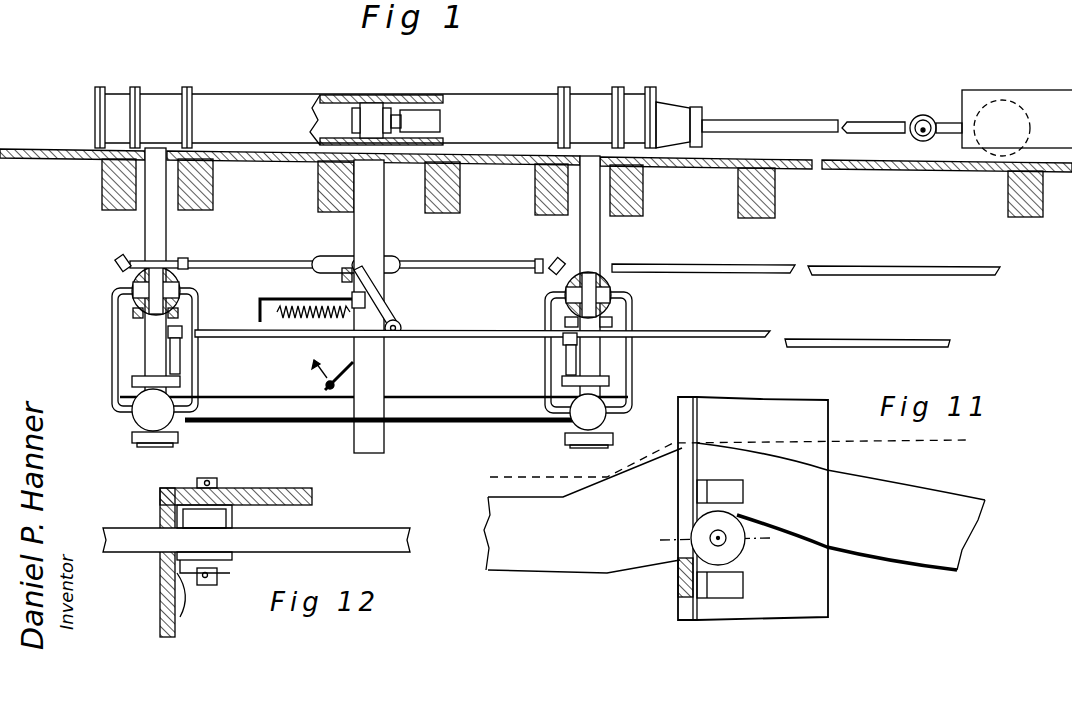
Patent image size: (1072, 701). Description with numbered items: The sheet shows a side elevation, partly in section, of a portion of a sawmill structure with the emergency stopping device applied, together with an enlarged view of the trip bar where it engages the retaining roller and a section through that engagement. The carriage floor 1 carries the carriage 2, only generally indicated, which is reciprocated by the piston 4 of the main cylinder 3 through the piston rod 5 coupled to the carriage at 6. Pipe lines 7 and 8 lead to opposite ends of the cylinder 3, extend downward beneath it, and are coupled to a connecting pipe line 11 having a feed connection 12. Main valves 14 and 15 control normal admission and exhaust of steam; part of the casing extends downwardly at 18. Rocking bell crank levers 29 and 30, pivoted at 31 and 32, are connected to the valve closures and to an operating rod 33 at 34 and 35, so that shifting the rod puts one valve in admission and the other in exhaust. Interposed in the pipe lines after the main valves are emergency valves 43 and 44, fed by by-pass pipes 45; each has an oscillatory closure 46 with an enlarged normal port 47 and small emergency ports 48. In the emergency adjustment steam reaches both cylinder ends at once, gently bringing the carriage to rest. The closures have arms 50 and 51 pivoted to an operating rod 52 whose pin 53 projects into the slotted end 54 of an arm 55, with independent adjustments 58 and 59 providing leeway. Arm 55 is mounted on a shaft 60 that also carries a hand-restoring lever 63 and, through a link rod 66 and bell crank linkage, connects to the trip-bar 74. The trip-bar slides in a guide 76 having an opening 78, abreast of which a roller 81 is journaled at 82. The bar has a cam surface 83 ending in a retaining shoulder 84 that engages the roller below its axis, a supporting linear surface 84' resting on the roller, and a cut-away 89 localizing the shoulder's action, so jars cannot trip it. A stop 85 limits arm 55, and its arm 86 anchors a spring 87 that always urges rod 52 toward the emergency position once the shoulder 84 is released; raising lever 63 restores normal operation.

In FIG. 1, the carriage floor 1 is at (880, 170).
In FIG. 1, the carriage 2 is at (998, 96).
In FIG. 1, the main cylinder 3 is at (480, 105).
In FIG. 1, the piston 4 is at (375, 110).
In FIG. 1, the piston rod 5 is at (415, 120).
In FIG. 1, the coupling 6 is at (923, 126).
In FIG. 1, the pipe line 7 is at (153, 243).
In FIG. 1, the pipe line 8 is at (600, 240).
In FIG. 1, the connecting pipe line 11 is at (470, 416).
In FIG. 11, the feed connection 12 is at (737, 460).
In FIG. 1, the main valve 14 is at (130, 434).
In FIG. 1, the main valve 15 is at (612, 440).
In FIG. 1, the casing extension 18 is at (600, 262).
In FIG. 1, the bell crank lever 29 is at (185, 352).
In FIG. 1, the bell crank lever 30 is at (562, 352).
In FIG. 1, the pivot 31 is at (185, 370).
In FIG. 1, the pivot 32 is at (565, 372).
In FIG. 1, the operating rod 33 is at (572, 330).
In FIG. 1, the connection 34 is at (193, 332).
In FIG. 1, the connection 35 is at (545, 334).
In FIG. 1, the emergency valve 43 is at (180, 283).
In FIG. 1, the emergency valve 44 is at (610, 287).
In FIG. 1, the by-pass pipe 45 is at (115, 376).
In FIG. 1, the oscillatory valve closure 46 is at (133, 306).
In FIG. 1, the normal port 47 is at (133, 284).
In FIG. 1, the emergency port 48 is at (170, 262).
In FIG. 1, the arm 50 is at (125, 255).
In FIG. 1, the arm 51 is at (559, 261).
In FIG. 1, the operating rod 52 is at (290, 262).
In FIG. 1, the pin 53 is at (367, 258).
In FIG. 1, the slotted end 54 is at (344, 276).
In FIG. 1, the arm 55 is at (380, 303).
In FIG. 1, the independent adjustment 58 is at (188, 262).
In FIG. 1, the independent adjustment 59 is at (536, 262).
In FIG. 1, the shaft 60 is at (400, 324).
In FIG. 1, the hand-restoring lever 63 is at (353, 373).
In FIG. 1, the link rod 66 is at (780, 265).
In FIG. 11, the trip-bar 74 is at (898, 487).
In FIG. 12, the trip-bar 74 is at (345, 536).
In FIG. 11, the guide 76 is at (790, 398).
In FIG. 12, the guide 76 is at (262, 490).
In FIG. 11, the opening 78 is at (677, 567).
In FIG. 12, the opening 78 is at (165, 560).
In FIG. 11, the roller 81 is at (732, 552).
In FIG. 12, the roller 81 is at (230, 522).
In FIG. 12, the journal 82 is at (197, 482).
In FIG. 11, the cam surface 83 is at (643, 571).
In FIG. 11, the retaining shoulder 84 is at (627, 510).
In FIG. 11, the supporting linear surface 84' is at (775, 498).
In FIG. 1, the stop 85 is at (355, 305).
In FIG. 1, the arm 86 is at (268, 298).
In FIG. 1, the spring 87 is at (262, 350).
In FIG. 11, the cut-away 89 is at (692, 524).